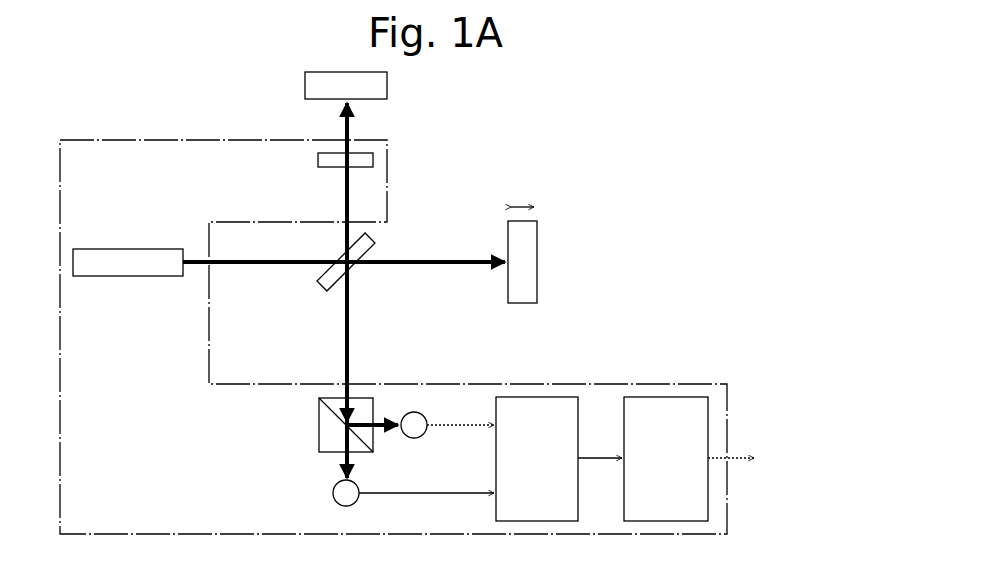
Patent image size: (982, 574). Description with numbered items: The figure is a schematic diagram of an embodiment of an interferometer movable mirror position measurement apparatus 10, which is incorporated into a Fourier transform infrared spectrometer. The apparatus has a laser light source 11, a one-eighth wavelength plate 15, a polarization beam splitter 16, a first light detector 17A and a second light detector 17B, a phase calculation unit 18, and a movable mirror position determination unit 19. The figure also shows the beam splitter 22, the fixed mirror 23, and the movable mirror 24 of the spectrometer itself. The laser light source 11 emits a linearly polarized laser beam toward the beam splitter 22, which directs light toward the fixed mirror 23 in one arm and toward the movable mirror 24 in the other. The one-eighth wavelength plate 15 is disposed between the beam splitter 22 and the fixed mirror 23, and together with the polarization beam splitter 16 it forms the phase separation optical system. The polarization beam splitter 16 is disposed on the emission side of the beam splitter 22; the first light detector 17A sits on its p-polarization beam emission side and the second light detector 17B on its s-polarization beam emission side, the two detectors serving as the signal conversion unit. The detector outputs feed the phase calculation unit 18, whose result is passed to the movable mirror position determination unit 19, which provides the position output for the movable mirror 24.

The interferometer movable mirror position measurement apparatus 10 is at (727, 384).
The laser light source 11 is at (100, 262).
The ⅛ wavelength plate 15 is at (373, 160).
The polarization beam splitter 16 is at (327, 425).
The first light detector 17A is at (413, 423).
The second light detector 17B is at (340, 490).
The phase calculation unit 18 is at (578, 521).
The movable mirror position determination unit 19 is at (708, 521).
The beam splitter 22 is at (330, 280).
The fixed mirror 23 is at (373, 86).
The movable mirror 24 is at (522, 287).